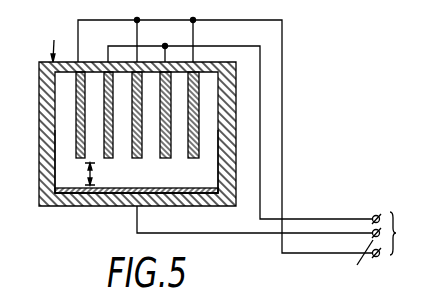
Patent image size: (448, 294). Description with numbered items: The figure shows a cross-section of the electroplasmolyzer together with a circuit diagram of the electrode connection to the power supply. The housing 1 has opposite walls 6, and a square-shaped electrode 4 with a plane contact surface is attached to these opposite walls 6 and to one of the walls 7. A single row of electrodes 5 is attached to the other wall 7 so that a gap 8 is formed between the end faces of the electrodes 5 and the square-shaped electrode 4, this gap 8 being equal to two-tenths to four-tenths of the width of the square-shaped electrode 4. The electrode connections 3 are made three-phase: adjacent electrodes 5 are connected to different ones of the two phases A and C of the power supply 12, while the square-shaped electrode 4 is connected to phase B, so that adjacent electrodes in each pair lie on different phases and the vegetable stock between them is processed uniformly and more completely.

The housing 1 is at (50, 45).
The electrical connection wiring 3 is at (213, 90).
The square-shaped electrode 4 is at (39, 175).
The electrodes 5 is at (134, 155).
The opposite walls 6 is at (39, 103).
The wall 7 is at (105, 207).
The gap 8 is at (85, 173).
The power supply 12 is at (388, 238).